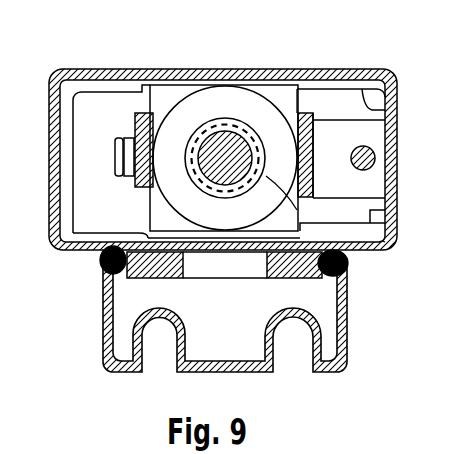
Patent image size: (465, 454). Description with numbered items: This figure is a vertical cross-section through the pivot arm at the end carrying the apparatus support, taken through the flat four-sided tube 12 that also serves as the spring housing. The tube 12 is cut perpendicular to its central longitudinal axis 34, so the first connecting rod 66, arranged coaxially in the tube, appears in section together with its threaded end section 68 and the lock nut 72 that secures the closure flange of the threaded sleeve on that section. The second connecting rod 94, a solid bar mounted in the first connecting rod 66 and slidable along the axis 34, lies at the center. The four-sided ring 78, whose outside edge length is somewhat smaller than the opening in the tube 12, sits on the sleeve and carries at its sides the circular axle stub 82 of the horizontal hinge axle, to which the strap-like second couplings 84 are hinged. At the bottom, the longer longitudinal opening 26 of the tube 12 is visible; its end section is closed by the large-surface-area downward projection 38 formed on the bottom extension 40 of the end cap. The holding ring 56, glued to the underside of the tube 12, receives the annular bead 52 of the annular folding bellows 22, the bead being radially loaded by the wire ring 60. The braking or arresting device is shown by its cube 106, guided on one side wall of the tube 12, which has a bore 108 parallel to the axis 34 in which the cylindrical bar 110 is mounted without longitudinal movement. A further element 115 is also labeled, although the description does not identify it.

The four-sided tube 12 is at (117, 64).
The annular folding bellows 22 is at (112, 373).
The longitudinal opening 26 is at (133, 232).
The central longitudinal axis 34 is at (246, 120).
The downward projection 38 is at (105, 304).
The extension 40 is at (392, 246).
The annular bead 52 is at (100, 262).
The holding ring 56 is at (299, 279).
The wire ring 60 is at (350, 262).
The first connecting rod 66 is at (372, 218).
The threaded end section 68 is at (223, 117).
The lock nut 72 is at (236, 88).
The four-sided ring 78 is at (243, 238).
The axle stub 82 is at (117, 147).
The second couplings 84 is at (155, 88).
The second connecting rod 94 is at (209, 200).
The cube 106 is at (382, 72).
The bore 108 is at (388, 186).
The cylindrical bar 110 is at (378, 150).
The opening 115 is at (135, 229).